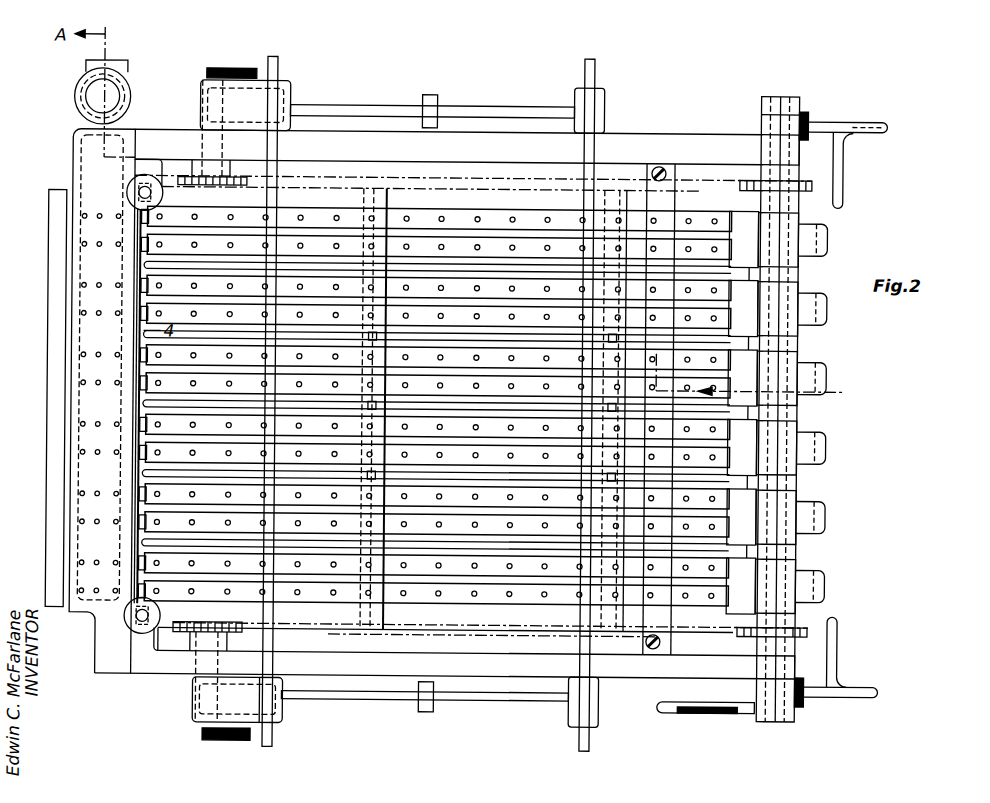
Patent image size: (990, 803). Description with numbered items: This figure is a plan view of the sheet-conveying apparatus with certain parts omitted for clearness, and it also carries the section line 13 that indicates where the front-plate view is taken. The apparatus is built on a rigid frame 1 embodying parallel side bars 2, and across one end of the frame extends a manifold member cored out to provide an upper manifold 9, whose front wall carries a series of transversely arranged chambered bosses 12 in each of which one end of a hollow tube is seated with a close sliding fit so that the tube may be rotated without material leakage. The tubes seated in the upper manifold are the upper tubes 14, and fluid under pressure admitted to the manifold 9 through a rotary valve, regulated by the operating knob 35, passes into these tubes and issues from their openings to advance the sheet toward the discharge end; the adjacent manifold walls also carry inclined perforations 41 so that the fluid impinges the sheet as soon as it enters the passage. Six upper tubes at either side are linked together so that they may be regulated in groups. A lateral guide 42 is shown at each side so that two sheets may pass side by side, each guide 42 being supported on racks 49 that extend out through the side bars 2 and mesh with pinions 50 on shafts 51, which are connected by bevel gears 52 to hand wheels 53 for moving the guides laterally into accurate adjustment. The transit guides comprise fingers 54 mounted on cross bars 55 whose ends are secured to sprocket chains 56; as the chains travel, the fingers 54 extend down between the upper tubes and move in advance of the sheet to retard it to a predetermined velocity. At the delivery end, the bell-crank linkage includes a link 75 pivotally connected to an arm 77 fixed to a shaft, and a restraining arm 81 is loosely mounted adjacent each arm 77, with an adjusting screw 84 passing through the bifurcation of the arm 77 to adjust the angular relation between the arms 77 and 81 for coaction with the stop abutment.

The frame 1 is at (505, 132).
The side bars 2 is at (632, 133).
The upper manifold chamber 9 is at (72, 145).
The chambered bosses 12 is at (150, 236).
The section line 13 is at (753, 370).
The upper tubes 14 is at (330, 186).
The operating knob 35 is at (124, 82).
The inclined perforations 41 is at (118, 492).
The lateral guide 42 is at (492, 268).
The racks 49 is at (276, 72).
The pinions 50 is at (286, 710).
The shafts 51 is at (390, 106).
The bevel gears 52 is at (252, 104).
The hand wheels 53 is at (220, 70).
The fingers 54 is at (606, 337).
The cross bars 55 is at (388, 208).
The sprocket chains 56 is at (456, 180).
The link 75 is at (668, 716).
The arm 77 is at (712, 715).
The restraining arm 81 is at (828, 118).
The adjusting screw 84 is at (800, 708).